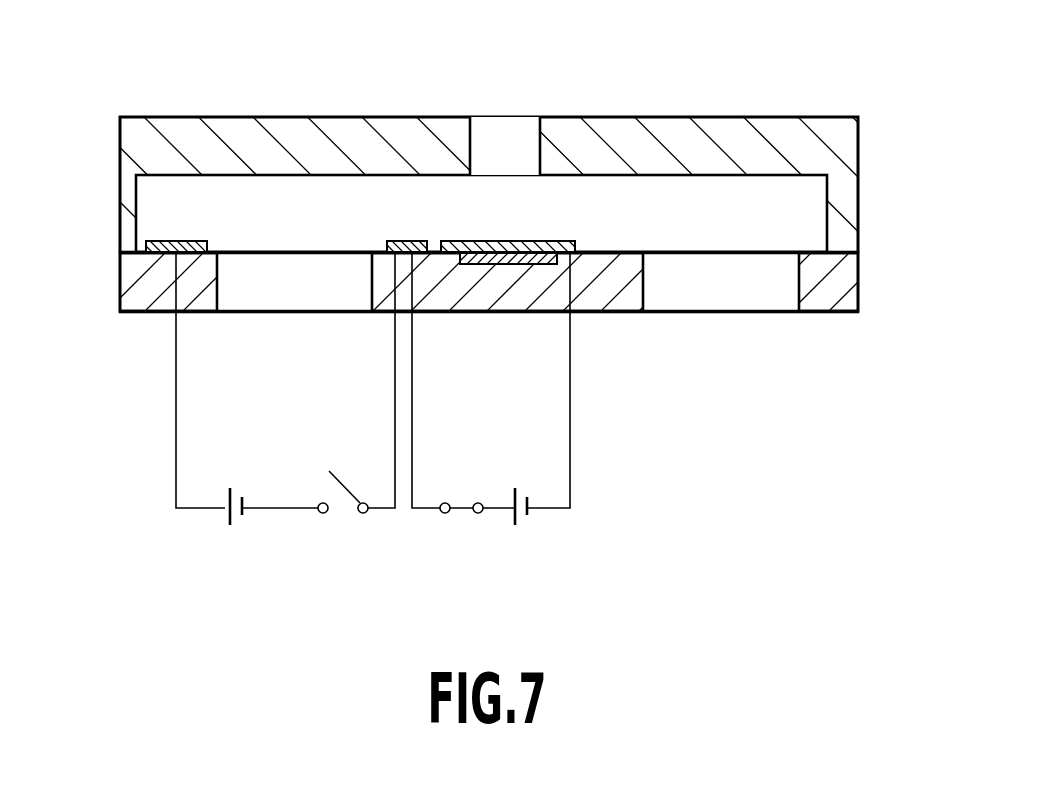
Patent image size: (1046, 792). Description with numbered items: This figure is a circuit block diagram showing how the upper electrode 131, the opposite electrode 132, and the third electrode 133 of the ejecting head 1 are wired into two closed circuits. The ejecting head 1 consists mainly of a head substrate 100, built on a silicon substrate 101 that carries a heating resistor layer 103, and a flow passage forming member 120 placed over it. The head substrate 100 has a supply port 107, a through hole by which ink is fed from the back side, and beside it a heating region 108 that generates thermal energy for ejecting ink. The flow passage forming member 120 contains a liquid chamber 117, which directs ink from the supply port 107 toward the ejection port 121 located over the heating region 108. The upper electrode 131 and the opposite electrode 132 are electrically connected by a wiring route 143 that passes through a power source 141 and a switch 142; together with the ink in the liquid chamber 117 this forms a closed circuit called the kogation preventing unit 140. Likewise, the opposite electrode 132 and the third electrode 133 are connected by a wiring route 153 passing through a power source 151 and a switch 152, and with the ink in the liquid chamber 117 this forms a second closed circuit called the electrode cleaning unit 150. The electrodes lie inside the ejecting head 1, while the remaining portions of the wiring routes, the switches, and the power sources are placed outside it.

The ejecting head 1 is at (110, 117).
The head substrate 100 is at (523, 396).
The silicon substrate 101 is at (140, 298).
The heating resistor layer 103 is at (477, 262).
The supply port 107 is at (732, 272).
The heating region 108 is at (509, 279).
The liquid chamber 117 is at (295, 210).
The flow passage forming member 120 is at (523, 396).
The ejection port 121 is at (505, 127).
The upper electrode 131 is at (532, 245).
The opposite electrode 132 is at (403, 247).
The third electrode 133 is at (178, 247).
The kogation preventing unit 140 is at (539, 424).
The power source 141 is at (530, 500).
The switch 142 is at (448, 500).
The wiring route 143 is at (570, 413).
The electrode cleaning unit 150 is at (238, 424).
The power source 151 is at (242, 500).
The switch 152 is at (347, 487).
The wiring route 153 is at (176, 414).